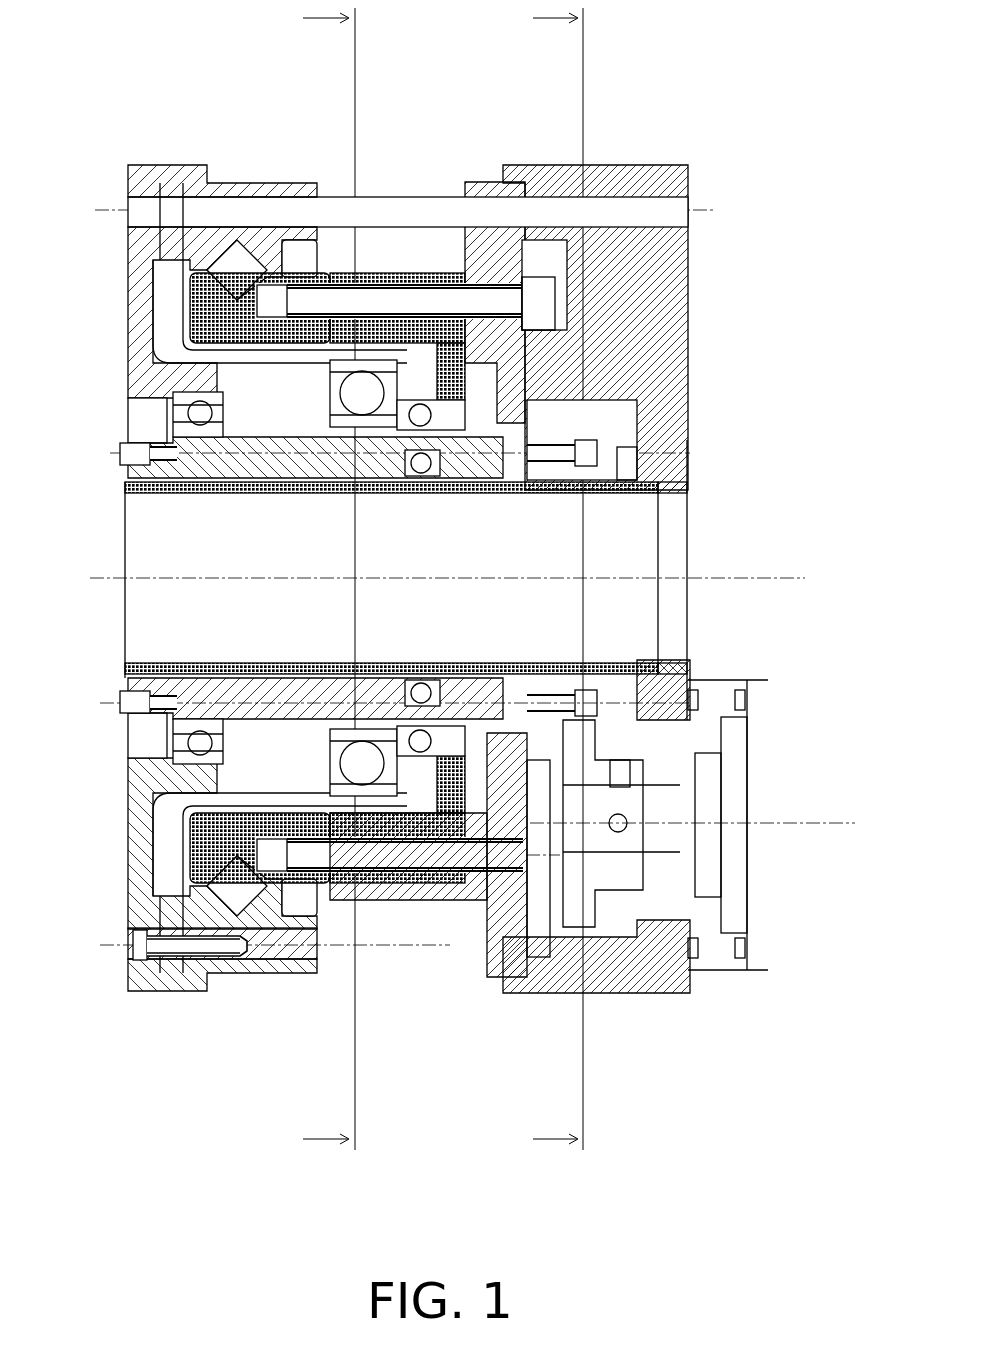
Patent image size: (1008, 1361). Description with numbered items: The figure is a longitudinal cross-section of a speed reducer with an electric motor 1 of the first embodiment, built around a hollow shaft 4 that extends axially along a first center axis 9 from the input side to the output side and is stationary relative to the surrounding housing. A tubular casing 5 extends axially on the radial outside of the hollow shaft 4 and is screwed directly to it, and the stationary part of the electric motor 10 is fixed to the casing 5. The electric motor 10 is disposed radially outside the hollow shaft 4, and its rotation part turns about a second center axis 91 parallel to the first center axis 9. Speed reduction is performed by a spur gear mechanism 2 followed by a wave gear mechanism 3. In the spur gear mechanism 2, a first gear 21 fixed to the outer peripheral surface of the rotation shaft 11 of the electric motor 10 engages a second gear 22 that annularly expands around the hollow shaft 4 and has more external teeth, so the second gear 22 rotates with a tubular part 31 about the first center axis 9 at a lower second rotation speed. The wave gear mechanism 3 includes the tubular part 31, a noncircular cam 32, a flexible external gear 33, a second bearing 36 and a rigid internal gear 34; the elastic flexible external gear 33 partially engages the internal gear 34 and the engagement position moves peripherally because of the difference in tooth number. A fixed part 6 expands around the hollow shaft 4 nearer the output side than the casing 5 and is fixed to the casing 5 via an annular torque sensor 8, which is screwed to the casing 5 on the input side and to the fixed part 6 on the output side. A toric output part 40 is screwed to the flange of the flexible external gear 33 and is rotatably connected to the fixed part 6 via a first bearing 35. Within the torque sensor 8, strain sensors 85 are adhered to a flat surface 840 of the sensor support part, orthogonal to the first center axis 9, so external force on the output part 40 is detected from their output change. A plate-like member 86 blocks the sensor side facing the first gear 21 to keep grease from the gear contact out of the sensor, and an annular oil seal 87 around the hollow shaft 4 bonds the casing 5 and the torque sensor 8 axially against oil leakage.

The speed reducer with an electric motor 1 is at (235, 58).
The spur gear mechanism 2 is at (697, 848).
The wave gear mechanism 3 is at (341, 988).
The hollow shaft 4 is at (600, 490).
The casing 5 is at (667, 172).
The fixed part 6 is at (405, 265).
The torque sensor 8 is at (495, 975).
The first center axis 9 is at (801, 578).
The electric motor 10 is at (756, 992).
The rotation shaft 11 is at (665, 960).
The first gear 21 is at (612, 940).
The second gear 22 is at (560, 995).
The tubular part 31 is at (205, 998).
The noncircular cam 32 is at (388, 890).
The flexible external gear 33 is at (386, 330).
The internal gear 34 is at (315, 265).
The first bearing 35 is at (225, 263).
The second bearing 36 is at (353, 300).
The output part 40 is at (130, 830).
The strain sensor 85 is at (498, 255).
The plate-like member 86 is at (538, 966).
The oil seal 87 is at (591, 420).
The second center axis 91 is at (812, 823).
The surface 840 is at (541, 260).